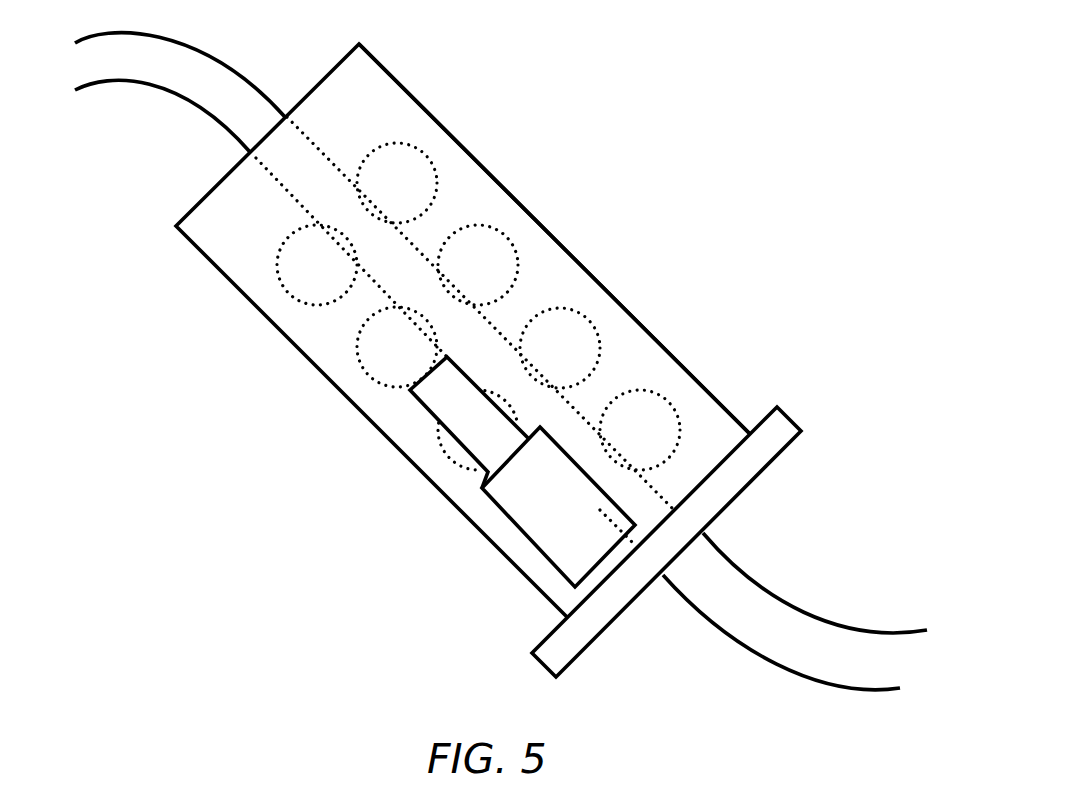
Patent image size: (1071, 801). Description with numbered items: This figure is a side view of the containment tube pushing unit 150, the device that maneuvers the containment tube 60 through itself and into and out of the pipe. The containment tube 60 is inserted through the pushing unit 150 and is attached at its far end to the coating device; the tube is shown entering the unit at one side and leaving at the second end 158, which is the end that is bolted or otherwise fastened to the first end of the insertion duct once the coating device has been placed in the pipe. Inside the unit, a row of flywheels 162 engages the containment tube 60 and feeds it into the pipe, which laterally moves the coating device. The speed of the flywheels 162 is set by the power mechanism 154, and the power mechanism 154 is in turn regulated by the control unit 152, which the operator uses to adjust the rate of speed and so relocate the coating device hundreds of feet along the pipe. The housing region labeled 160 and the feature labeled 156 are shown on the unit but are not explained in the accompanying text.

The containment tube 60 is at (173, 95).
The pushing unit 150 is at (645, 165).
The control unit 152 is at (427, 408).
The power mechanism 154 is at (498, 512).
The fluid passages 156 is at (187, 214).
The second end 158 is at (738, 488).
The housing 160 is at (617, 300).
The flywheels 162 is at (373, 328).